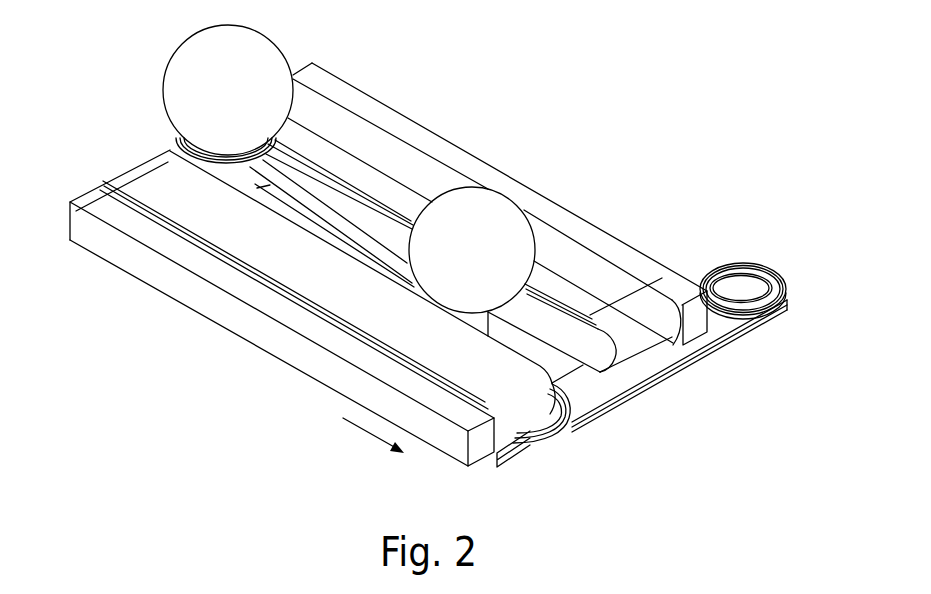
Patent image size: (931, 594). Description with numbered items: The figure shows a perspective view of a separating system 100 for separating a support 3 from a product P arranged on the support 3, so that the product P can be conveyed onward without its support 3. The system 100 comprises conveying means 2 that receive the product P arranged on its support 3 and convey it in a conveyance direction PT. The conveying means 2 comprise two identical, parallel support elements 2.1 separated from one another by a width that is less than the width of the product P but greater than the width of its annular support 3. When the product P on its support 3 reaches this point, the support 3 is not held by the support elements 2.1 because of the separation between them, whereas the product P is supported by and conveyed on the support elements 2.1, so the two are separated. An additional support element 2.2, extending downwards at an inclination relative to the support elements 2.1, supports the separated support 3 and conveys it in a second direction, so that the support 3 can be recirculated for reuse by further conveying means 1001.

The separating system 100 is at (527, 109).
The conveying means 2 is at (142, 142).
The support elements 2.1 is at (580, 260).
The additional support element 2.2 is at (320, 160).
The support 3 is at (225, 163).
The product P is at (262, 53).
The conveying means 1001 is at (647, 363).
The conveyance direction PT is at (371, 444).